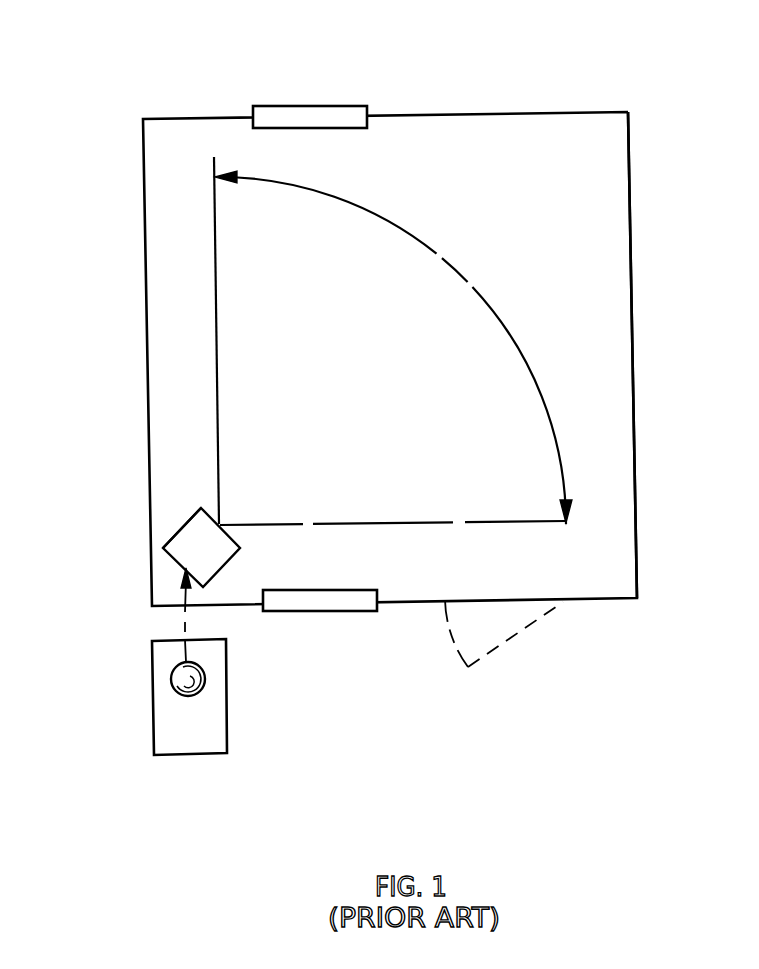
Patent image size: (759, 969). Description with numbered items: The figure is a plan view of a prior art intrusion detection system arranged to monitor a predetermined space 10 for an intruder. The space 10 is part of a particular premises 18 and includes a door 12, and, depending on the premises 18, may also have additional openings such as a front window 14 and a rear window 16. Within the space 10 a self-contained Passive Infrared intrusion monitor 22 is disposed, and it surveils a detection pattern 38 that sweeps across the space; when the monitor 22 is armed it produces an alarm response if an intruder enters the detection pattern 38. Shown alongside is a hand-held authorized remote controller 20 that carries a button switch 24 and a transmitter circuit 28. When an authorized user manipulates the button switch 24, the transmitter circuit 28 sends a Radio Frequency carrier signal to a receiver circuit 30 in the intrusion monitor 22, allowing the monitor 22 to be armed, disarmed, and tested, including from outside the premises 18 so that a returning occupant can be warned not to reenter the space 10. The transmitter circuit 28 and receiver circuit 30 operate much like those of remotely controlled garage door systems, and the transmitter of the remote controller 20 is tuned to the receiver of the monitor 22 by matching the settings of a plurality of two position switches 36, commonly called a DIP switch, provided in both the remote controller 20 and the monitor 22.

The predetermined space 10 is at (434, 125).
The door 12 is at (500, 643).
The front window 14 is at (303, 611).
The rear window 16 is at (287, 106).
The premises 18 is at (630, 281).
The remote controller 20 is at (185, 703).
The intrusion monitor 22 is at (191, 512).
The button switch 24 is at (171, 679).
The transmitter circuit 28 is at (163, 712).
The receiver circuit 30 is at (171, 541).
The two position switches 36 is at (193, 570).
The detection pattern 38 is at (487, 302).